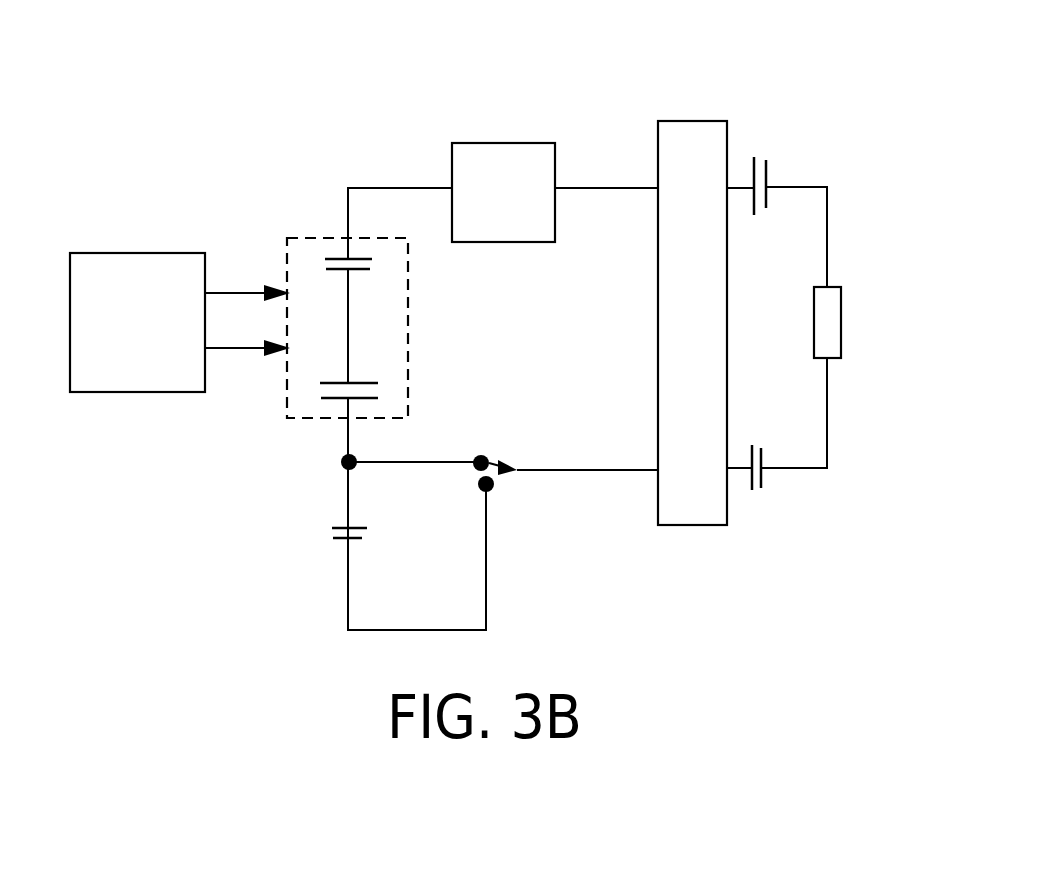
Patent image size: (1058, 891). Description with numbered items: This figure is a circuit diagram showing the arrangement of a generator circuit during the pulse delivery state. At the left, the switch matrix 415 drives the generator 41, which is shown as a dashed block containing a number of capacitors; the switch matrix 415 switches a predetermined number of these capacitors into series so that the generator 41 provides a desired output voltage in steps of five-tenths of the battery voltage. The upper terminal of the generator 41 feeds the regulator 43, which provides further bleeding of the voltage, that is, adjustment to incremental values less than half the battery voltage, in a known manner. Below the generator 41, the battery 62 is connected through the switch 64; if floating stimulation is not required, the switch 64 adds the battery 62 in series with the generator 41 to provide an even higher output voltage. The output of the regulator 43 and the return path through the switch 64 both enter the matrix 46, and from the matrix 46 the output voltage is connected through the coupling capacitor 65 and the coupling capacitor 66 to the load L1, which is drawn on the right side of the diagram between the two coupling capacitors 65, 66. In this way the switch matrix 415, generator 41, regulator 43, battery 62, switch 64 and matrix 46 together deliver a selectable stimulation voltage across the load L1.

The switch matrix 415 is at (137, 392).
The generator 41 is at (408, 315).
The regulator 43 is at (503, 192).
The matrix 46 is at (680, 121).
The coupling capacitor 65 is at (770, 165).
The load L1 is at (840, 287).
The coupling capacitor 66 is at (762, 455).
The switch 64 is at (497, 452).
The battery 62 is at (330, 548).